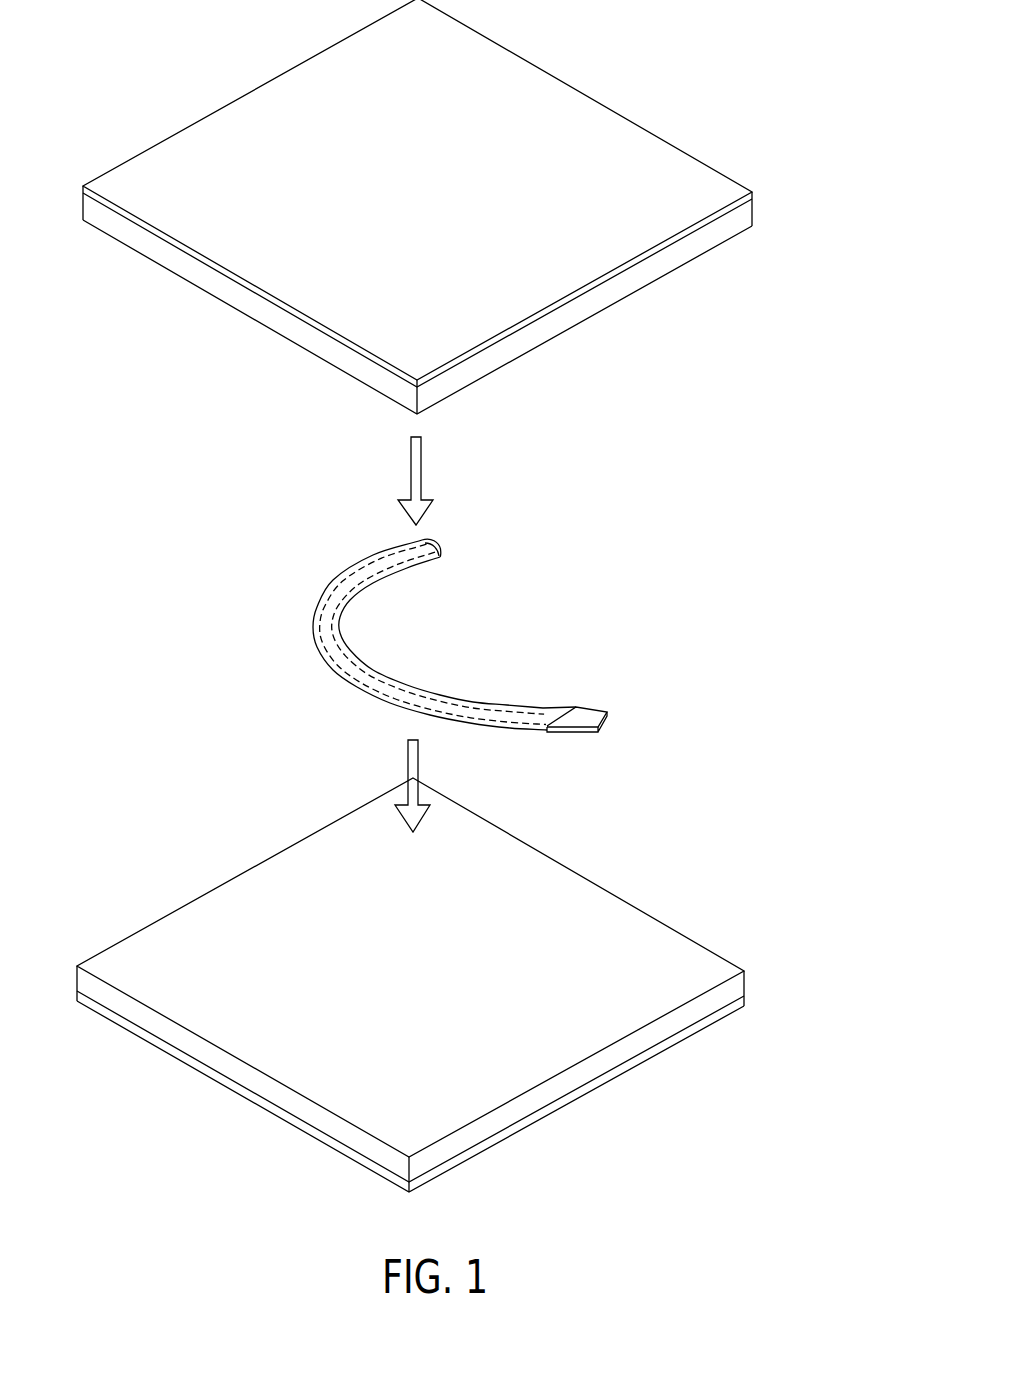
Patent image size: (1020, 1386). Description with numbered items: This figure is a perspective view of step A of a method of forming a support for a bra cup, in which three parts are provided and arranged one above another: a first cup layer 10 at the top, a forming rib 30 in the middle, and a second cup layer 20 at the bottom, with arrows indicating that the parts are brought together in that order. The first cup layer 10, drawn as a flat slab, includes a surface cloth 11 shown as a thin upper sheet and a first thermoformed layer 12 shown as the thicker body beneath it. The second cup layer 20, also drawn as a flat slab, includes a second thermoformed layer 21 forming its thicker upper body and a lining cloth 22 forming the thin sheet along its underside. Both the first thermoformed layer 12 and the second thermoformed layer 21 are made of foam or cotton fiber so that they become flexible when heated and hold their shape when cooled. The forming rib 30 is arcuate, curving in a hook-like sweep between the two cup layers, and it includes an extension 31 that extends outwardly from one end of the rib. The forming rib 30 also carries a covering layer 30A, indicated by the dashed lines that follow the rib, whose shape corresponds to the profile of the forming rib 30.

The first cup layer 10 is at (474, 207).
The surface cloth 11 is at (752, 193).
The first thermoformed layer 12 is at (753, 207).
The second cup layer 20 is at (464, 985).
The second thermoformed layer 21 is at (744, 982).
The lining cloth 22 is at (747, 1000).
The forming rib 30 is at (411, 635).
The covering layer 30A is at (312, 628).
The extension 31 is at (590, 710).